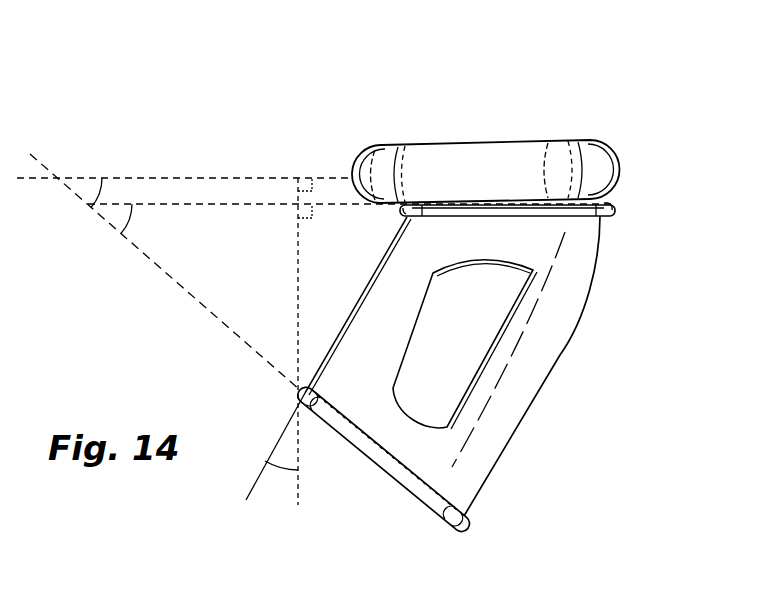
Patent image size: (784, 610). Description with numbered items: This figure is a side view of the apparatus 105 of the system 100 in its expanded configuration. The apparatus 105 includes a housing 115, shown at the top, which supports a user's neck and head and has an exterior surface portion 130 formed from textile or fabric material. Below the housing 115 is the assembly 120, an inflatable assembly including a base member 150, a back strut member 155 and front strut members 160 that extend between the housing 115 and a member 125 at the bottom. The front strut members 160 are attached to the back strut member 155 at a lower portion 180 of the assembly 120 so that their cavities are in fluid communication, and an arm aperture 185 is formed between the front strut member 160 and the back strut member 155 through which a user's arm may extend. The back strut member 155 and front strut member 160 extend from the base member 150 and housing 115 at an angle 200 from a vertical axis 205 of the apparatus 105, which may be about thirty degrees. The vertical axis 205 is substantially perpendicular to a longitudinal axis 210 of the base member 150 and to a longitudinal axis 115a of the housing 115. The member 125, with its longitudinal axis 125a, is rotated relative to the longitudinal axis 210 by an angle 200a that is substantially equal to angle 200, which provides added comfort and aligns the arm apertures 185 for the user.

The system 100 is at (662, 83).
The apparatus 105 is at (672, 120).
The housing 115 is at (430, 135).
The longitudinal axis of housing 115a is at (192, 178).
The assembly 120 is at (565, 356).
The member 125 is at (358, 458).
The longitudinal axis of member 125a is at (220, 320).
The exterior surface portion 130 is at (598, 148).
The base member 150 is at (612, 205).
The back strut member 155 is at (505, 413).
The front strut member 160 is at (392, 292).
The lower portion 180 is at (418, 410).
The arm aperture 185 is at (490, 293).
The angle 200 is at (287, 471).
The angle 200a is at (100, 197).
The vertical axis 205 is at (298, 486).
The longitudinal axis of base member 210 is at (262, 204).